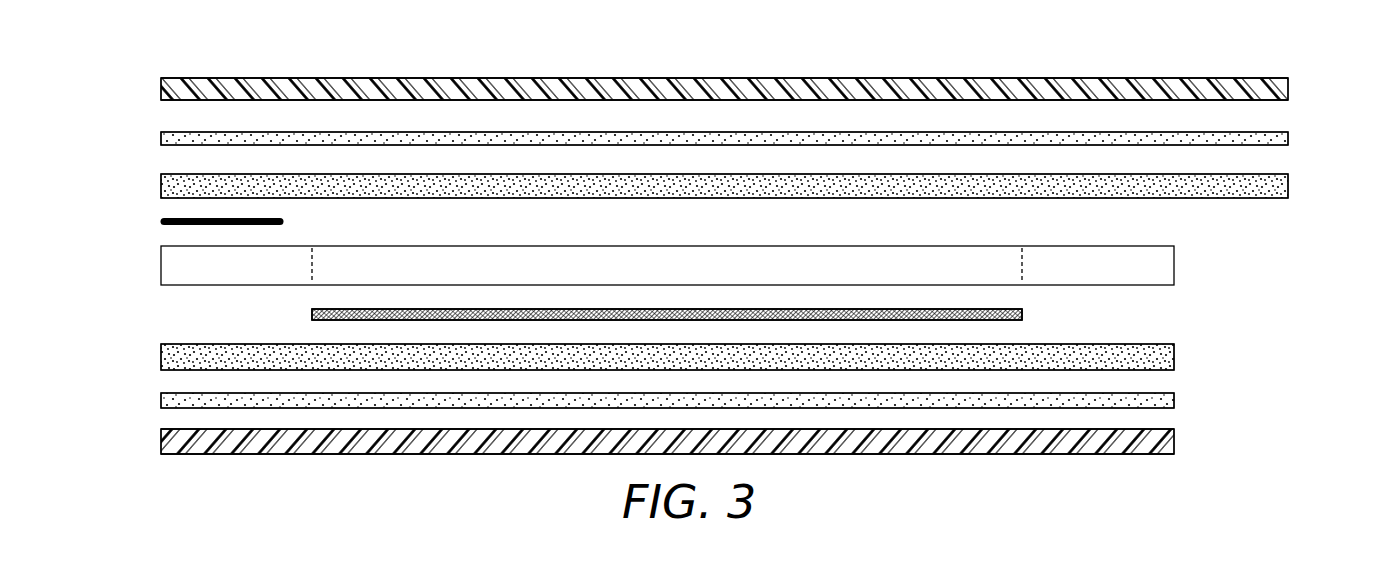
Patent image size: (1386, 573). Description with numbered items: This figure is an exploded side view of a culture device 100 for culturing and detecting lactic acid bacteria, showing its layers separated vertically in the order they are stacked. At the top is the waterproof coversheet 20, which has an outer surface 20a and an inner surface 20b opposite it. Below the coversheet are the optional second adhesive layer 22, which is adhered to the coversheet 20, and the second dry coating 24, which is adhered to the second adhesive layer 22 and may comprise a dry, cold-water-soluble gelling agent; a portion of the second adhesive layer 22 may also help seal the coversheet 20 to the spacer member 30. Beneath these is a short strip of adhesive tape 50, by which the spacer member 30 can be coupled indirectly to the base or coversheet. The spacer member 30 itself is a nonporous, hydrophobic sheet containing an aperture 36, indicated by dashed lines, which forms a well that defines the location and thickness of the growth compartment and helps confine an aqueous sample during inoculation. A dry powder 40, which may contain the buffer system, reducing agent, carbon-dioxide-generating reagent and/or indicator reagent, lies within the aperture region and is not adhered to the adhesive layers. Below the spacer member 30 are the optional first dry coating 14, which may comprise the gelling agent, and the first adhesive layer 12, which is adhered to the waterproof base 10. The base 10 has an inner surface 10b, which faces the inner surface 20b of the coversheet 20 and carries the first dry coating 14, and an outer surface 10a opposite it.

The culture device 100 is at (158, 29).
The waterproof coversheet 20 is at (1032, 77).
The outer surface of the coversheet 20a is at (577, 77).
The inner surface of the coversheet 20b is at (353, 99).
The second adhesive layer 22 is at (1290, 138).
The second dry coating 24 is at (160, 186).
The adhesive tape 50 is at (160, 223).
The spacer member 30 is at (705, 246).
The aperture 36 is at (1020, 260).
The dry powder 40 is at (700, 309).
The first dry coating 14 is at (160, 358).
The first adhesive layer 12 is at (1175, 400).
The waterproof base 10 is at (928, 455).
The outer surface of the base 10a is at (417, 455).
The inner surface of the base 10b is at (353, 430).